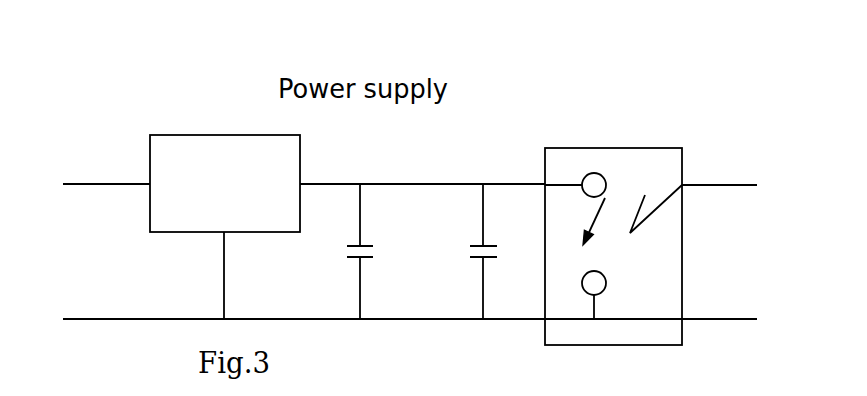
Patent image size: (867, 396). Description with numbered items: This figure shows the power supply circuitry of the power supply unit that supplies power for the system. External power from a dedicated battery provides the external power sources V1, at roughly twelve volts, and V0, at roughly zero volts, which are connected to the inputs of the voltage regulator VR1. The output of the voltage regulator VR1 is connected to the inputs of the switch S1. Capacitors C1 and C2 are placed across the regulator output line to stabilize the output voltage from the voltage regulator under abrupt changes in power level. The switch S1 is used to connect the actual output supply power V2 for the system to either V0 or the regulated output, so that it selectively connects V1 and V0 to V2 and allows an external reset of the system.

The voltage regulator VR1 is at (225, 122).
The capacitor C1 is at (347, 251).
The capacitor C2 is at (471, 250).
The switch S1 is at (645, 148).
The external power source V1 is at (106, 177).
The output supply power V2 is at (719, 182).
The external power source V0 is at (410, 314).